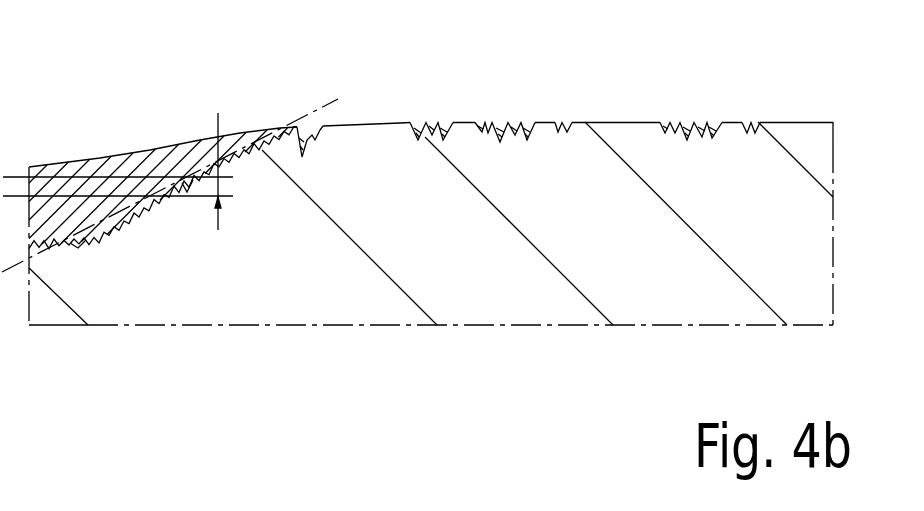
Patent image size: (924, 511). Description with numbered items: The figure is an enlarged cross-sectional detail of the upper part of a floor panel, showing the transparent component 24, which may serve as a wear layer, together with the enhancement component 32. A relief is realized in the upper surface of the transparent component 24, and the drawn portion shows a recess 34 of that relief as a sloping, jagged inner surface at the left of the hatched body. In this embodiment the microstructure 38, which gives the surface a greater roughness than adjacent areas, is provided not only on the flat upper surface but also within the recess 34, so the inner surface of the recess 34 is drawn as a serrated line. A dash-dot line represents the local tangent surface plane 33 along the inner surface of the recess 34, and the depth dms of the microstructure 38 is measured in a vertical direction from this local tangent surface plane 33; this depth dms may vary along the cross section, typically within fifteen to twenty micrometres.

The transparent component 24 is at (783, 222).
The enhancement component 32 is at (52, 200).
The local tangent surface plane 33 is at (317, 108).
The recess 34 is at (98, 242).
The microstructure 38 is at (78, 248).
The depth of the microstructure dms is at (217, 130).